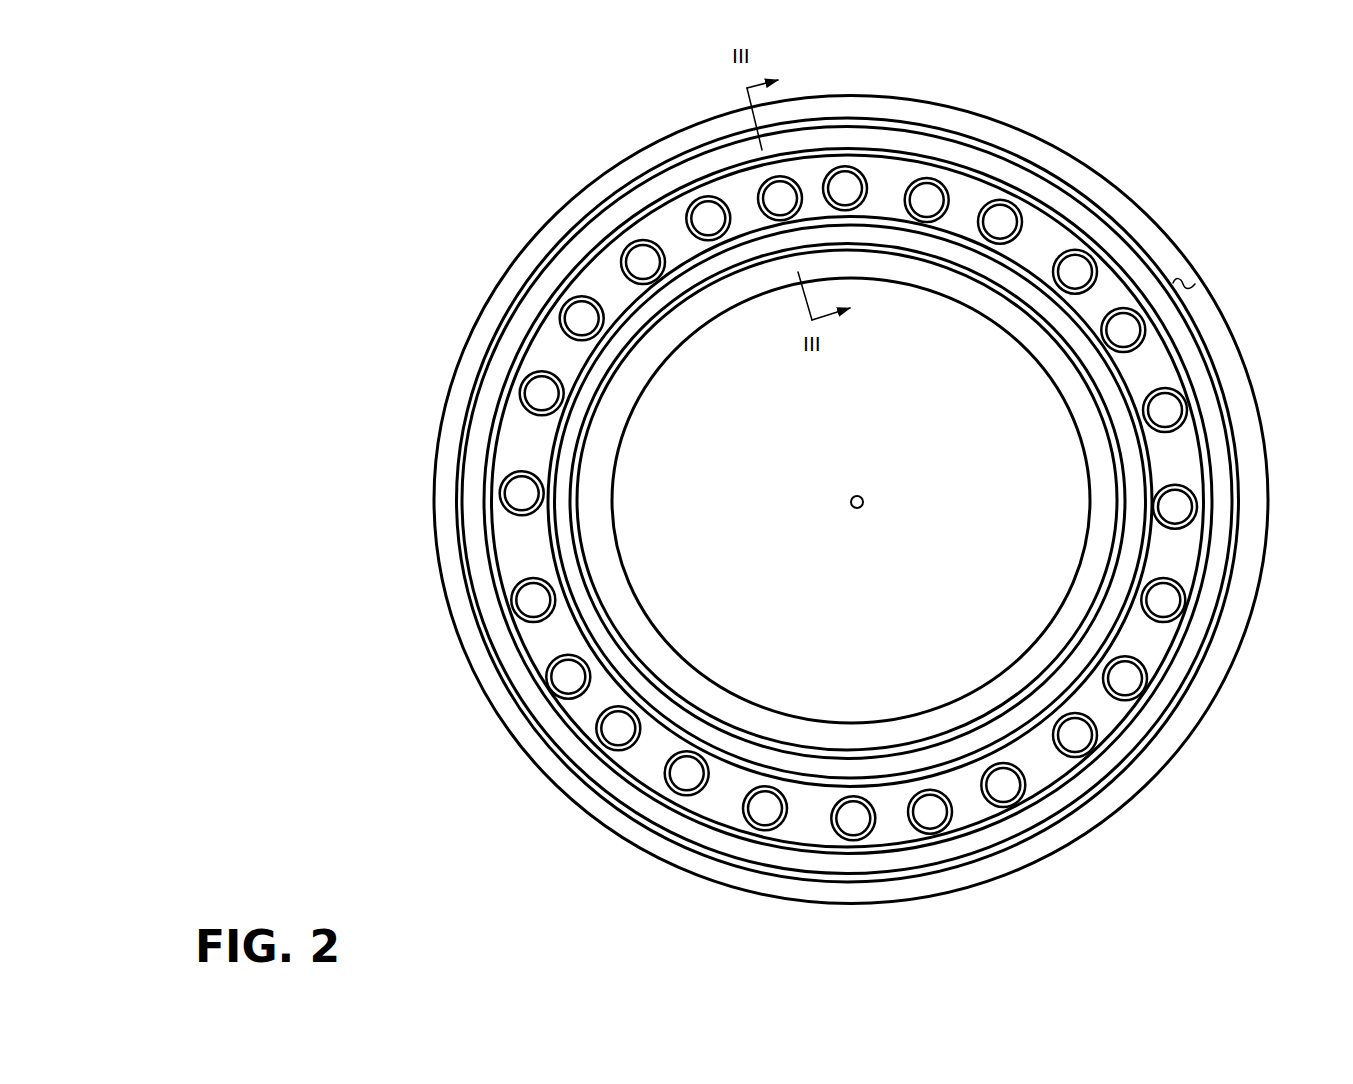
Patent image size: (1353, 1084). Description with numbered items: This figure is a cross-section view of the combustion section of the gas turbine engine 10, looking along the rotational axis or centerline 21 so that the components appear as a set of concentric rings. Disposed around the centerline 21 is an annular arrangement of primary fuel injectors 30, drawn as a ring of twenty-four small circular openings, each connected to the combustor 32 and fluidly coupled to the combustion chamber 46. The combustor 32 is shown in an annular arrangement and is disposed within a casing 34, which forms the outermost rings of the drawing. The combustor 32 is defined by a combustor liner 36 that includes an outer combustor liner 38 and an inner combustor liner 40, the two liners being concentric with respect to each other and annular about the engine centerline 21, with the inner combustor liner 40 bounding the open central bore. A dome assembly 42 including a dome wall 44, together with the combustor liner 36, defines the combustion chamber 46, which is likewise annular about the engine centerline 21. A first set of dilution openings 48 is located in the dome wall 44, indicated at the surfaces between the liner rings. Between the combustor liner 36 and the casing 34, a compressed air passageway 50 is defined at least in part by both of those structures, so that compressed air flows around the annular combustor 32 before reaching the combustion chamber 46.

The gas turbine engine 10 is at (990, 80).
The centerline 21 is at (852, 507).
The primary fuel injectors 30 is at (1166, 411).
The combustor 32 is at (1015, 143).
The casing 34 is at (1103, 188).
The combustor liner 36 is at (1242, 447).
The outer combustor liner 38 is at (1143, 228).
The inner combustor liner 40 is at (1002, 297).
The dome assembly 42 is at (890, 116).
The dome wall 44 is at (889, 196).
The combustion chamber 46 is at (1163, 355).
The first set of dilution openings 48 is at (686, 276).
The compressed air passageway 50 is at (1097, 320).